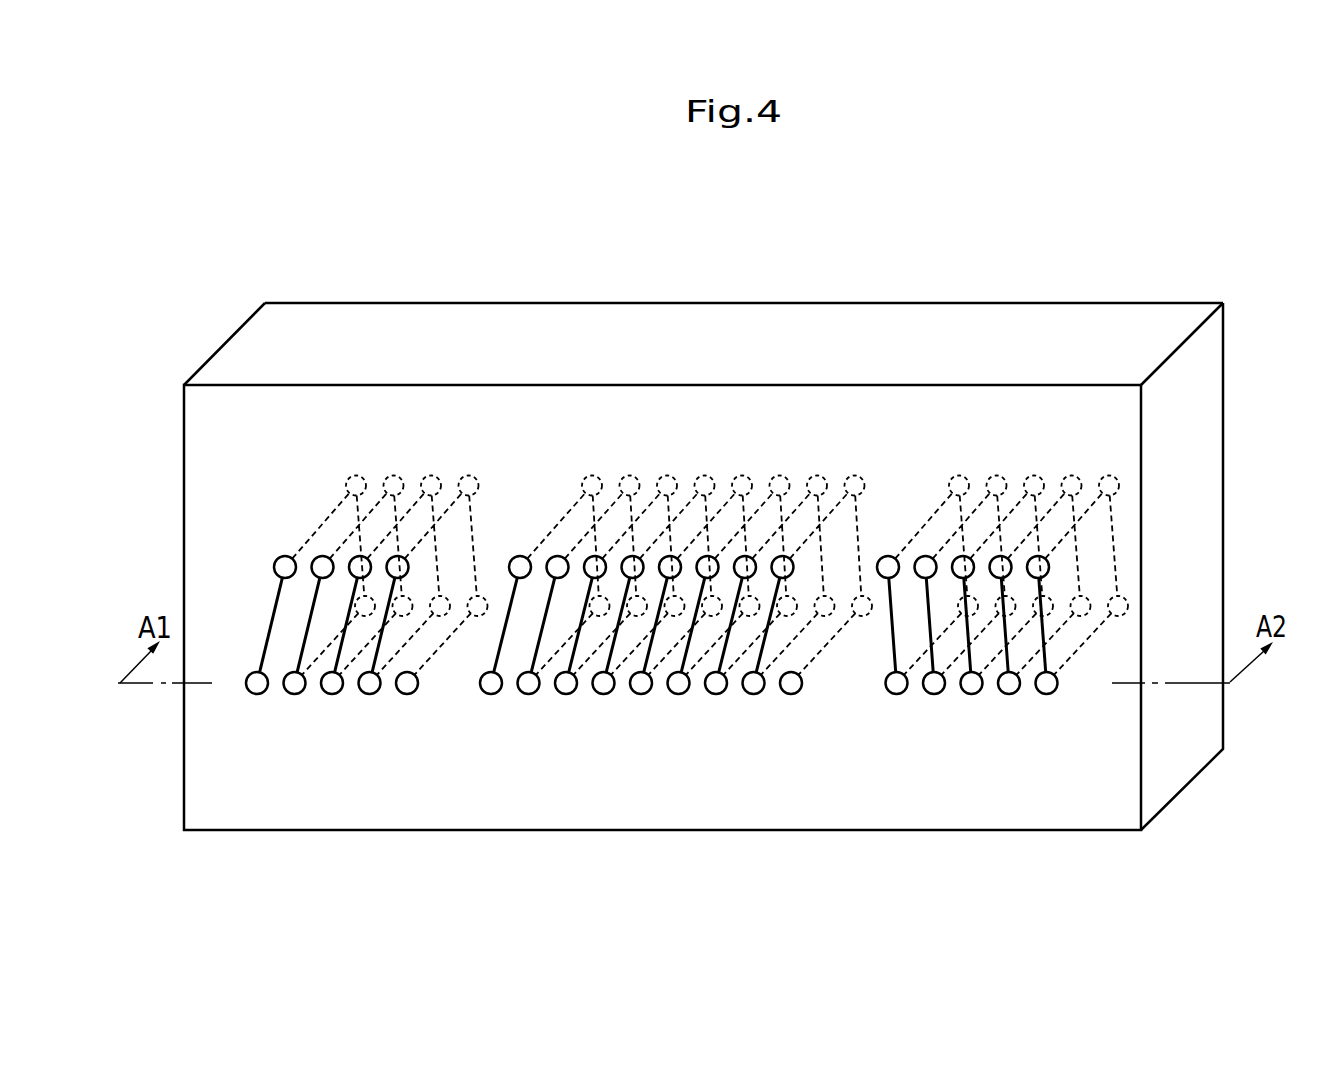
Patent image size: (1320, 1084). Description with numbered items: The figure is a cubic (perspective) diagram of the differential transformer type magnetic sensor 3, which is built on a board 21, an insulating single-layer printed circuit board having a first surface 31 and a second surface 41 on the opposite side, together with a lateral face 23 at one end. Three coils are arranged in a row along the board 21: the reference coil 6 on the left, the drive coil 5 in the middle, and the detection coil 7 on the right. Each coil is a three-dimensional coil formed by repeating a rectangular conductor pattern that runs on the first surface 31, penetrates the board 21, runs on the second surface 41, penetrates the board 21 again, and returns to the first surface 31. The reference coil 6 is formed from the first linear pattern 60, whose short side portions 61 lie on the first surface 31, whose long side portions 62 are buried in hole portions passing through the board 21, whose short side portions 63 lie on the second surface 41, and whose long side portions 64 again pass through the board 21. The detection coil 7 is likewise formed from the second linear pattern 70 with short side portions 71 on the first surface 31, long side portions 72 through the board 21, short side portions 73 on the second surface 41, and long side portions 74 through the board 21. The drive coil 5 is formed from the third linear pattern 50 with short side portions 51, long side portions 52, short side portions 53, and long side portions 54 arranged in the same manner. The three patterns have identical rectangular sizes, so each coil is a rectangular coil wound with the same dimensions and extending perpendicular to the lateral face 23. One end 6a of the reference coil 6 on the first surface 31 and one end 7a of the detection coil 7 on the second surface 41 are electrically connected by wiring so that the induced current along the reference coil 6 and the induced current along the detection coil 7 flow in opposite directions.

The differential transformer type magnetic sensor 3 is at (1162, 260).
The board 21 is at (1057, 304).
The lateral face 23 is at (1203, 353).
The first surface 31 is at (217, 452).
The second surface 41 is at (327, 303).
The drive coil 5 is at (707, 462).
The third linear pattern 50 is at (497, 652).
The short side portions 51 is at (497, 625).
The long side portions 52 is at (552, 530).
The short side portions 53 is at (597, 540).
The long side portions 54 is at (548, 660).
The reference coil 6 is at (395, 464).
The first linear pattern 60 is at (265, 648).
The short side portions 61 is at (270, 607).
The long side portions 62 is at (323, 522).
The short side portions 63 is at (360, 545).
The long side portions 64 is at (312, 658).
The one end of the reference coil 6a is at (407, 694).
The detection coil 7 is at (1020, 474).
The one end of the detection coil 7a is at (965, 475).
The second linear pattern 70 is at (1044, 584).
The short side portions 71 is at (1045, 625).
The long side portions 72 is at (1088, 507).
The short side portions 73 is at (1107, 513).
The long side portions 74 is at (1053, 635).